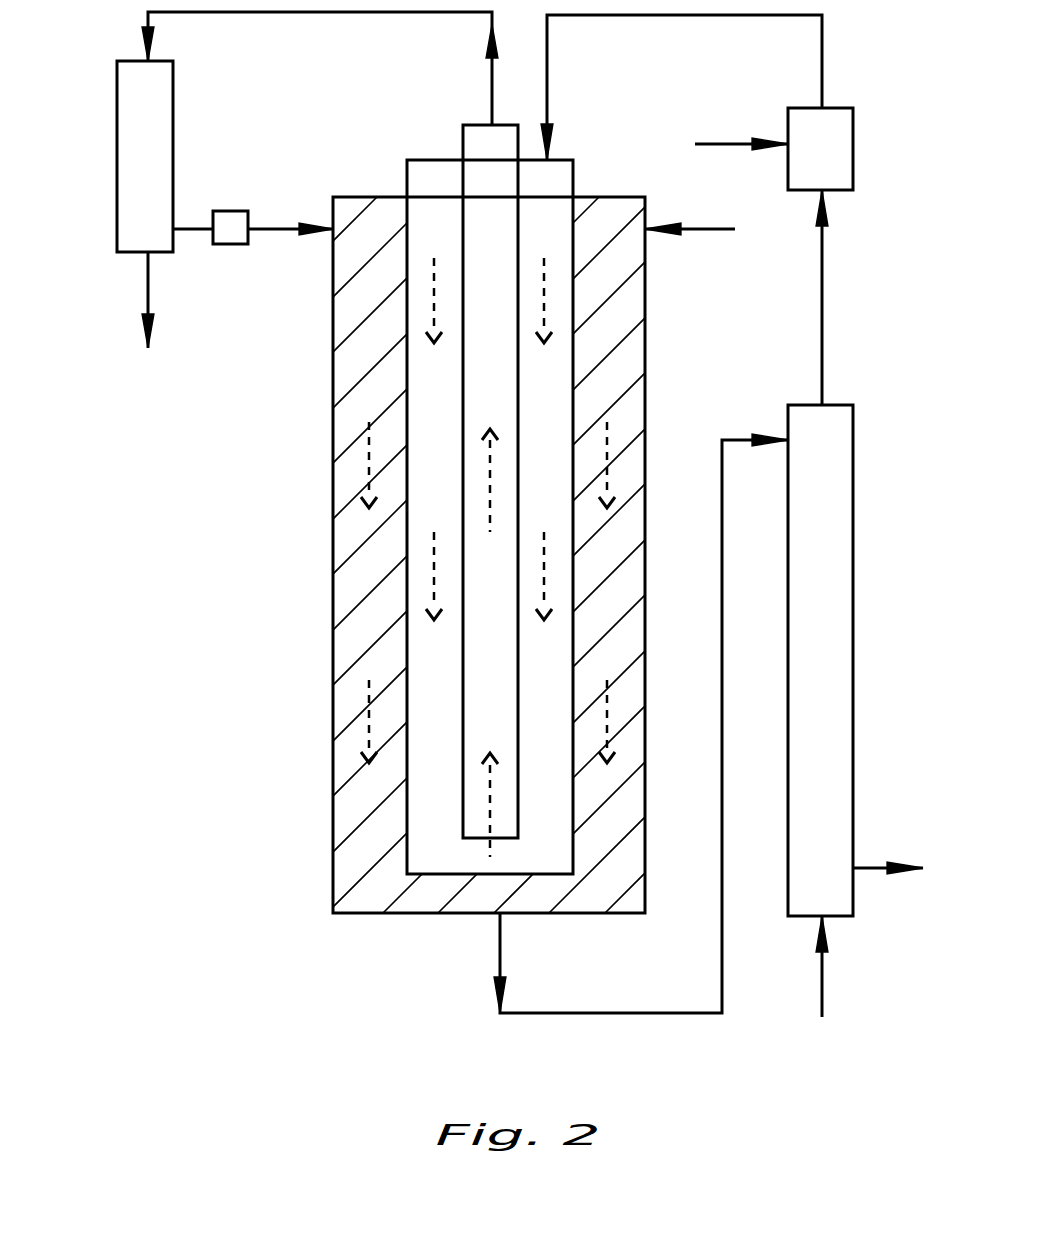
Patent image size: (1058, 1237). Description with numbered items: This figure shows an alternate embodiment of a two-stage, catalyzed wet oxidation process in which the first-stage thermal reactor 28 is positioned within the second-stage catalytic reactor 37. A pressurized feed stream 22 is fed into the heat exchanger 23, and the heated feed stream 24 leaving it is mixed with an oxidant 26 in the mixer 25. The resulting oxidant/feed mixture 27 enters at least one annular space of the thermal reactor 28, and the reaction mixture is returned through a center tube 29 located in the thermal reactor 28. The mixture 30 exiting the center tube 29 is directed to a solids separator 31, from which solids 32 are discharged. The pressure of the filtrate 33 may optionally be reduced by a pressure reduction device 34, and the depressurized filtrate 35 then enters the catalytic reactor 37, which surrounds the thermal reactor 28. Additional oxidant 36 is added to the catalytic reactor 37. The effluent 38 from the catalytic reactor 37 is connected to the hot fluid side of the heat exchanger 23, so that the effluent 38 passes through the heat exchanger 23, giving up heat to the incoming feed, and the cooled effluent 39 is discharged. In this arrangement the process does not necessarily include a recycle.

The pressurized feed stream 22 is at (822, 985).
The heat exchanger 23 is at (853, 697).
The heated feed stream 24 is at (822, 343).
The mixer 25 is at (853, 163).
The oxidant 26 is at (720, 143).
The oxidant/feed mixture 27 is at (547, 58).
The first-stage thermal reactor 28 is at (405, 178).
The center tube 29 is at (463, 130).
The mixture exiting center tube 30 is at (223, 13).
The solids separator 31 is at (117, 188).
The solids 32 is at (148, 277).
The filtrate 33 is at (195, 228).
The pressure reduction device 34 is at (228, 244).
The depressurized filtrate 35 is at (278, 230).
The additional oxidant 36 is at (703, 230).
The second-stage catalytic reactor 37 is at (333, 522).
The effluent 38 is at (500, 950).
The cooled effluent 39 is at (870, 868).